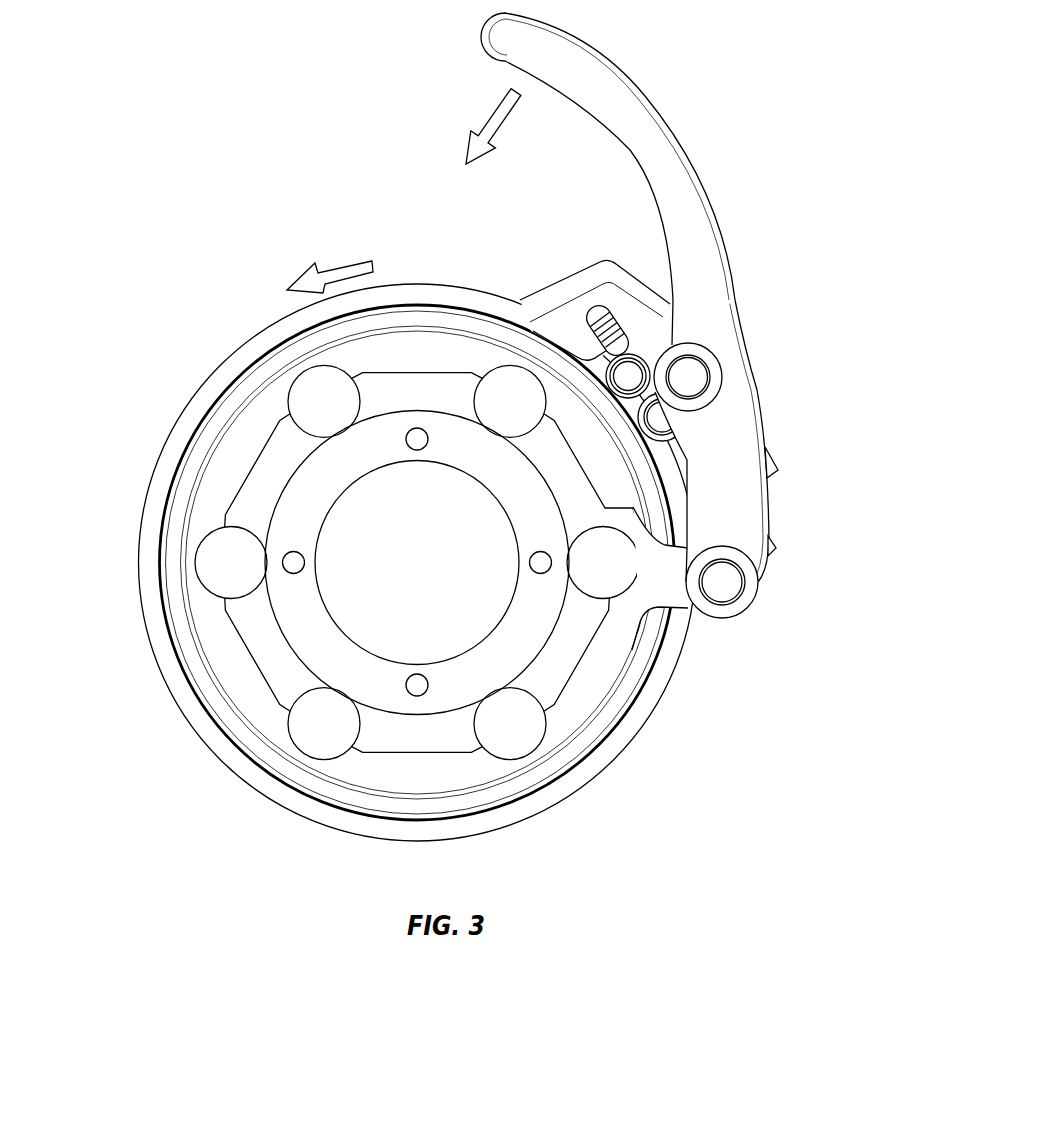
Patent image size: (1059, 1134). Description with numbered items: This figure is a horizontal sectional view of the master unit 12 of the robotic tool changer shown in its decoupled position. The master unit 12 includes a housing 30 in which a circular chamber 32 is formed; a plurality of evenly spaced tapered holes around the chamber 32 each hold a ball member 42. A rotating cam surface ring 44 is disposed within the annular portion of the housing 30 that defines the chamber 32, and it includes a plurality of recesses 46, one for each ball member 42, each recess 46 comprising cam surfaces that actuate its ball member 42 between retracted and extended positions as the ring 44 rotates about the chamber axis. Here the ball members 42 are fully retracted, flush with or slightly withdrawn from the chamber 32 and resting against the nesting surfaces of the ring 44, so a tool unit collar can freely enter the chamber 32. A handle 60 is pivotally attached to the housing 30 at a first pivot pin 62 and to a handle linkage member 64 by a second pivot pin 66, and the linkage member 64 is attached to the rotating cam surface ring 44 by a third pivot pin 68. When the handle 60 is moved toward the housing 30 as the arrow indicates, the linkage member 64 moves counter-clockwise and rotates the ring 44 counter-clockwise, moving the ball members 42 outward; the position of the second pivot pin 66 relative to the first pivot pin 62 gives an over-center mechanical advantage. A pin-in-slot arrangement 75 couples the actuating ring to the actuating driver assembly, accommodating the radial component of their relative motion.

The master unit 12 is at (658, 781).
The housing 30 is at (237, 350).
The circular chamber 32 is at (322, 652).
The ball member 42 is at (224, 563).
The rotating cam surface ring 44 is at (405, 345).
The recess 46 is at (265, 396).
The handle 60 is at (638, 133).
The first pivot pin 62 is at (662, 420).
The handle linkage member 64 is at (742, 511).
The second pivot pin 66 is at (695, 380).
The third pivot pin 68 is at (728, 586).
The pin-in-slot arrangement 75 is at (625, 362).